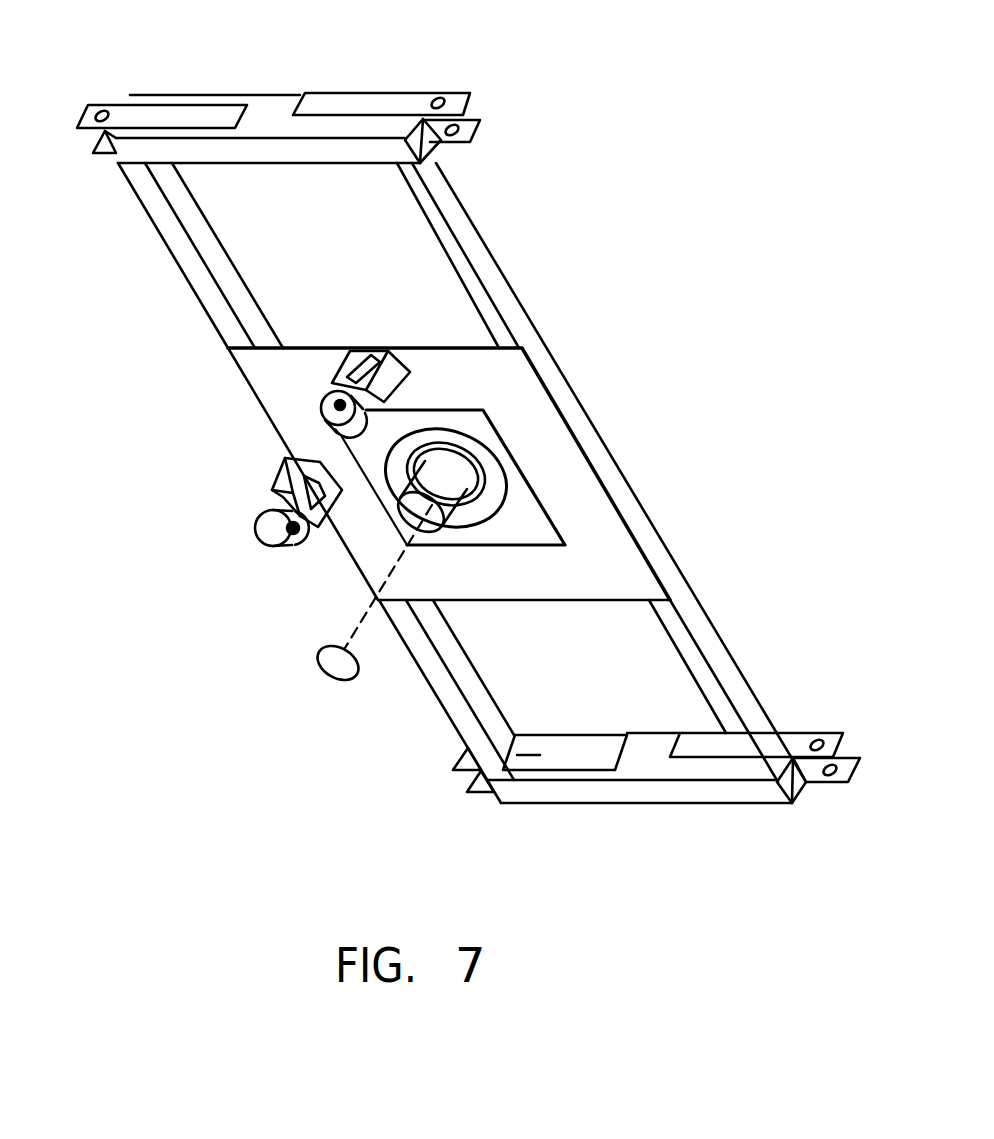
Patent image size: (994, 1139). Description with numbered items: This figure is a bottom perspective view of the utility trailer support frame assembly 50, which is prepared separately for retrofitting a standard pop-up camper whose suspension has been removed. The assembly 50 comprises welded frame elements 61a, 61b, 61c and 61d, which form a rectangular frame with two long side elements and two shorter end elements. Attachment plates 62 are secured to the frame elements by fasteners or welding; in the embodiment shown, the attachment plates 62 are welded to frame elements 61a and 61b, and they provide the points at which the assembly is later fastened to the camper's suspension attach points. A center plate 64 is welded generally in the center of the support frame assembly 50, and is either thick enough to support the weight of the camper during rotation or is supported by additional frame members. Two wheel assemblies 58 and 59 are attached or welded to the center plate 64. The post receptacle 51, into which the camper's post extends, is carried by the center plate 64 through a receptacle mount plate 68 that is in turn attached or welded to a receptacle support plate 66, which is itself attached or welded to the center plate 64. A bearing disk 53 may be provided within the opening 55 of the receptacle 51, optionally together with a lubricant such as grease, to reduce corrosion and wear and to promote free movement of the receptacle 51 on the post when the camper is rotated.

The support frame assembly 50 is at (658, 196).
The post receptacle 51 is at (447, 488).
The bearing disk 53 is at (325, 659).
The opening 55 is at (413, 541).
The wheel assembly 58 is at (334, 376).
The wheel assembly 59 is at (270, 485).
The frame element 61a is at (643, 803).
The frame element 61b is at (744, 651).
The frame element 61c is at (272, 95).
The frame element 61d is at (178, 263).
The attachment plates 62 is at (105, 103).
The center plate 64 is at (550, 442).
The receptacle support plate 66 is at (478, 424).
The receptacle mount plate 68 is at (440, 442).